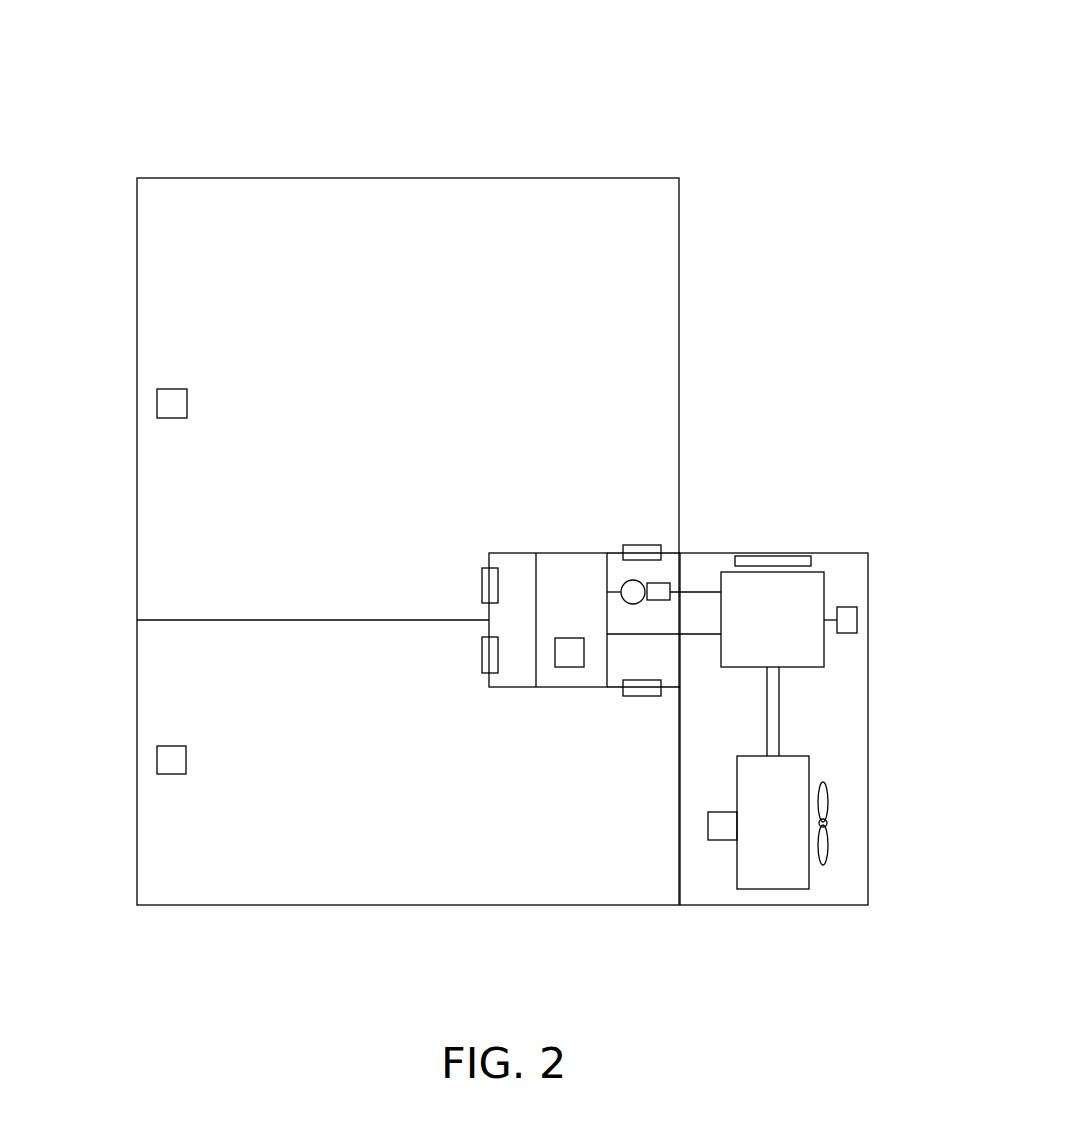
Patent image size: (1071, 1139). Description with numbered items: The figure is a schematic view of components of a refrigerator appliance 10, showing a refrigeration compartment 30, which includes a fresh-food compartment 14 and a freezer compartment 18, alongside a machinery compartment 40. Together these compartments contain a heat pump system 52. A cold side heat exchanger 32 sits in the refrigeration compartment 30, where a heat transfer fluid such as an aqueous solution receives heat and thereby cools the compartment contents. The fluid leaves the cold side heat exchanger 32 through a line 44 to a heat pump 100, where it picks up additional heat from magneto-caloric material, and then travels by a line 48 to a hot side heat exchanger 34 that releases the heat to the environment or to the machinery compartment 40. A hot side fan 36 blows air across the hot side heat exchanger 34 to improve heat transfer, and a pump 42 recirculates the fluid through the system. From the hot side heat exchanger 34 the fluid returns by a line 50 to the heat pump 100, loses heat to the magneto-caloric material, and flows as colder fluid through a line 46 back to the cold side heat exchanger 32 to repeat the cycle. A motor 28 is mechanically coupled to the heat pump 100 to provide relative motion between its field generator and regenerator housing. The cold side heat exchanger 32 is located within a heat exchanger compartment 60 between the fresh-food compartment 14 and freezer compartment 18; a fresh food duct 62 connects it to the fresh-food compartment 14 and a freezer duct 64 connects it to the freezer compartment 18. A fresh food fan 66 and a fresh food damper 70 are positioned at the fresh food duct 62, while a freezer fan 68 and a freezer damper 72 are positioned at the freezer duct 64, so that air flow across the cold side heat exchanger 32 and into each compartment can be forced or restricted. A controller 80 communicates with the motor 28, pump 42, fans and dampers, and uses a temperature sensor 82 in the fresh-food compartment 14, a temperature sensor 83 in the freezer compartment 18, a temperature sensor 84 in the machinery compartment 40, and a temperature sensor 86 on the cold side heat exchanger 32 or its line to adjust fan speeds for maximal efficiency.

The refrigerator appliance 10 is at (768, 59).
The fresh-food compartment 14 is at (657, 281).
The freezer compartment 18 is at (160, 829).
The motor 28 is at (847, 622).
The refrigeration compartment 30 is at (255, 200).
The cold side heat exchanger 32 is at (558, 587).
The hot side heat exchanger 34 is at (773, 865).
The hot side fan 36 is at (828, 822).
The machinery compartment 40 is at (847, 700).
The pump 42 is at (637, 598).
The line 44 is at (689, 590).
The line 46 is at (655, 635).
The line 48 is at (767, 735).
The line 50 is at (780, 742).
The heat pump system 52 is at (847, 562).
The heat exchanger compartment 60 is at (516, 680).
The fresh food duct 62 is at (478, 546).
The freezer duct 64 is at (478, 688).
The fresh food fan 66 is at (488, 585).
The freezer fan 68 is at (488, 660).
The fresh food damper 70 is at (638, 552).
The freezer damper 72 is at (642, 692).
The controller 80 is at (748, 556).
The temperature sensor 82 is at (172, 403).
The temperature sensor 83 is at (172, 760).
The temperature sensor 84 is at (722, 825).
The temperature sensor 86 is at (568, 652).
The heat pump 100 is at (765, 595).